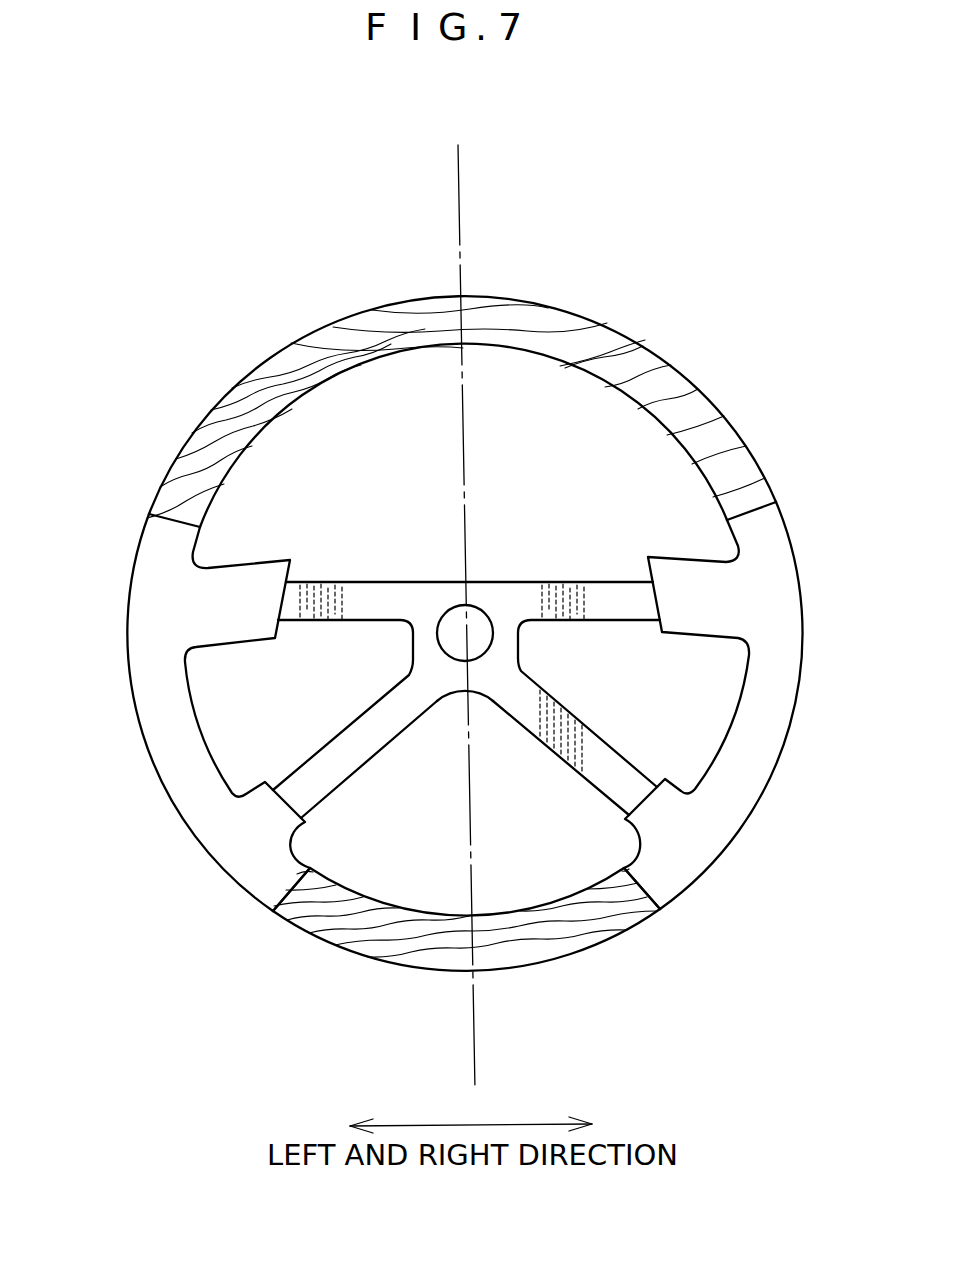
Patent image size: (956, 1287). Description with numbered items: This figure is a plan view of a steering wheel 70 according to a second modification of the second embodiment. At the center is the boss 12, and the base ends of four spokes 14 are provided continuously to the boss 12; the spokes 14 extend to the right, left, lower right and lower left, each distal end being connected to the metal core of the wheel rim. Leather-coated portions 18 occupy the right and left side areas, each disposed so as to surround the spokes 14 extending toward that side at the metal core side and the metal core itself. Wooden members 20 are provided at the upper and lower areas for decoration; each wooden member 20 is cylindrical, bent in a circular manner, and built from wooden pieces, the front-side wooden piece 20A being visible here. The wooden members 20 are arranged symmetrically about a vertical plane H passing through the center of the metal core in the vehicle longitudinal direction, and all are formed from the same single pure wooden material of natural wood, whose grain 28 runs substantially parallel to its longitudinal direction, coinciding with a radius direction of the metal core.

The steering wheel 70 is at (258, 262).
The vertical plane H is at (460, 210).
The boss 12 is at (488, 583).
The spokes 14 is at (342, 583).
The leather-coated portions 18 is at (145, 605).
The wooden members 20 is at (650, 346).
The wooden piece 20A is at (245, 378).
The grain 28 is at (528, 330).